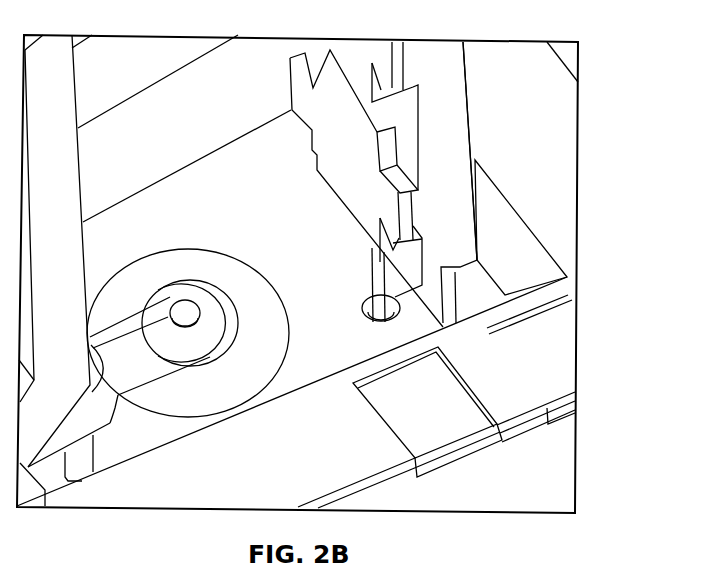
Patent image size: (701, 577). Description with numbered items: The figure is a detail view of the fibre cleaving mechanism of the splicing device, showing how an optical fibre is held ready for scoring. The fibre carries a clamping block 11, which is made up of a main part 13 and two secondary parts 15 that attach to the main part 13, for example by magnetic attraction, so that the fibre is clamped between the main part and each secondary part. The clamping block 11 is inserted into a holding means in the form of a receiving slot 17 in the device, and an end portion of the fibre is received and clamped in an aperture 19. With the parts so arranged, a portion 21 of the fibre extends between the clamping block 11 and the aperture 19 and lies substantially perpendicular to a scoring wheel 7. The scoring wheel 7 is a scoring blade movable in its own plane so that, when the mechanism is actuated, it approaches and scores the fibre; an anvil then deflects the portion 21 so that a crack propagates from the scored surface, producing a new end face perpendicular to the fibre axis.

The scoring wheel 7 is at (208, 260).
The clamping block 11 is at (488, 137).
The main part 13 is at (467, 98).
The secondary part 15 is at (332, 63).
The receiving slot 17 is at (492, 291).
The aperture 19 is at (398, 306).
The portion of the optical fibre 21 is at (538, 257).